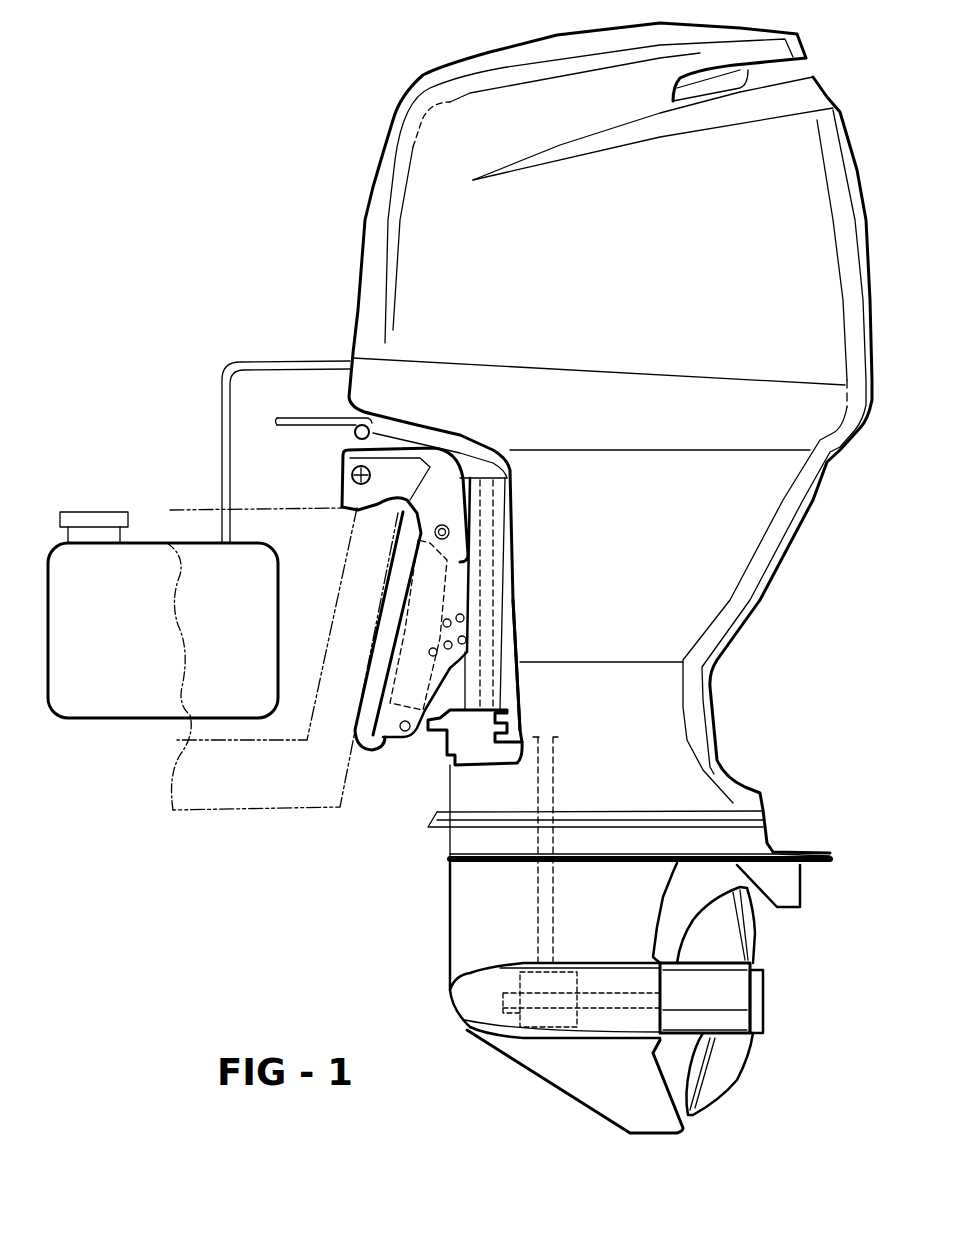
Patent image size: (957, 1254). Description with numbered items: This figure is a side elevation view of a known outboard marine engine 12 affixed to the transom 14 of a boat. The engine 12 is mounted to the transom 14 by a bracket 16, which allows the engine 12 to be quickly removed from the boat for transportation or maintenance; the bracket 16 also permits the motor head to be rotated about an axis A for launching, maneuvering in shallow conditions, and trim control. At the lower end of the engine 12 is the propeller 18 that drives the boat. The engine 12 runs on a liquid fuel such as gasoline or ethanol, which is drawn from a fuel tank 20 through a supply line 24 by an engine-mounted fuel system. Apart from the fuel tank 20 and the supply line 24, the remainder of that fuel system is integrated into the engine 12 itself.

The outboard marine engine 12 is at (358, 273).
The transom 14 is at (338, 598).
The bracket 16 is at (460, 503).
The propeller 18 is at (740, 1070).
The fuel tank 20 is at (122, 712).
The supply line 24 is at (232, 362).
The axis A is at (352, 480).